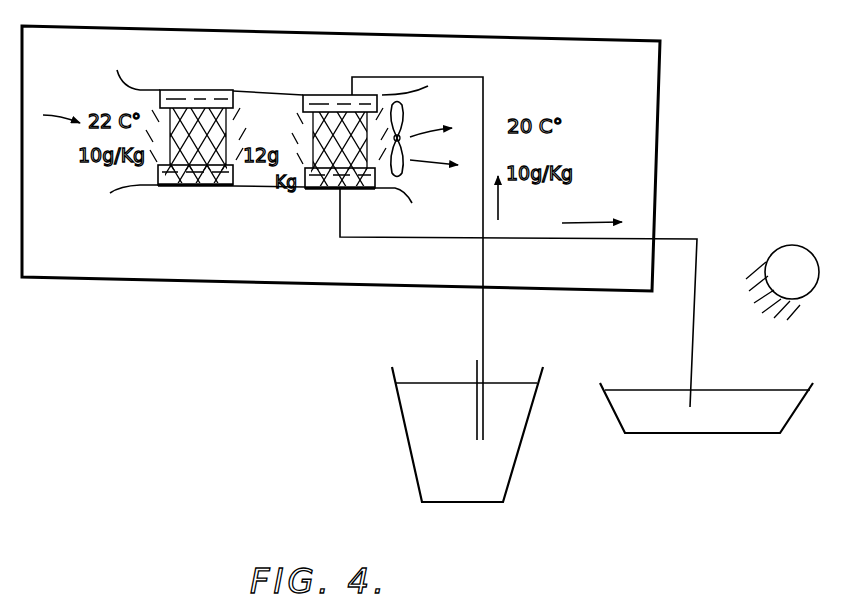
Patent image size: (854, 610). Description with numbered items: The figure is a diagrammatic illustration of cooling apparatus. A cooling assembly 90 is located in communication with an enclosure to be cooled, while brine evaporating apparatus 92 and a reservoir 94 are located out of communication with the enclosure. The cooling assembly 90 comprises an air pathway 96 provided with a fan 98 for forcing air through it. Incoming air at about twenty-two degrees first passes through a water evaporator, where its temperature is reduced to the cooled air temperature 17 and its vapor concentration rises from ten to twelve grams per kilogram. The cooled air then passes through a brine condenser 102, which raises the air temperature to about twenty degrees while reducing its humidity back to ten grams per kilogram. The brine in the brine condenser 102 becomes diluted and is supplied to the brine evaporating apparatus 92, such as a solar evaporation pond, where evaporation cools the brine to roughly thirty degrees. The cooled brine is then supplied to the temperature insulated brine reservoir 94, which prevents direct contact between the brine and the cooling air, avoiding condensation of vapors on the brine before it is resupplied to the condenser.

The cooling assembly 90 is at (169, 90).
The air pathway 96 is at (250, 106).
The air passage 17 is at (259, 137).
The fan 98 is at (408, 114).
The brine condenser 102 is at (188, 185).
The brine reservoir 94 is at (520, 465).
The brine evaporating apparatus 92 is at (706, 433).